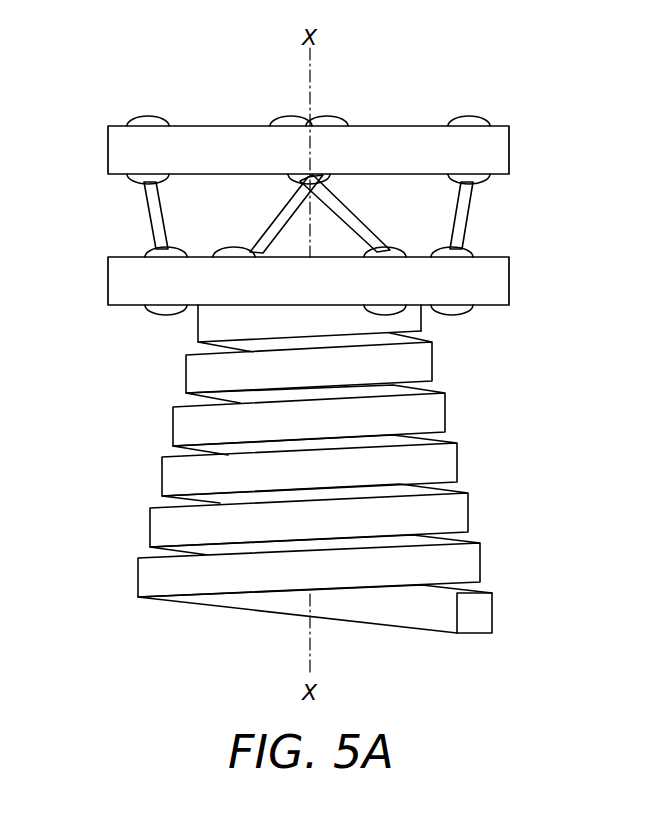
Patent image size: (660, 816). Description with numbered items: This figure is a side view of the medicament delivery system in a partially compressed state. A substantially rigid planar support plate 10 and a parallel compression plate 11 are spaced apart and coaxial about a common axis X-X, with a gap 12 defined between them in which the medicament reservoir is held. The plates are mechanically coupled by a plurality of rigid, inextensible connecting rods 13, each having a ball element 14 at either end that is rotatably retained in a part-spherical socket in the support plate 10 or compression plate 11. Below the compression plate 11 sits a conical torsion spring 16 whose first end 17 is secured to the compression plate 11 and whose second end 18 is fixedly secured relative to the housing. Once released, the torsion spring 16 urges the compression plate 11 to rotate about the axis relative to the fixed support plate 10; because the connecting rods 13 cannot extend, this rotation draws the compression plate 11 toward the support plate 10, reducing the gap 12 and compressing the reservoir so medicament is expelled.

The support plate 10 is at (500, 151).
The compression plate 11 is at (500, 280).
The gap 12 is at (425, 222).
The connecting rod 13 is at (153, 215).
The ball element 14 is at (167, 123).
The conical torsion spring 16 is at (450, 463).
The first end of torsion spring 17 is at (243, 318).
The second end of torsion spring 18 is at (487, 612).